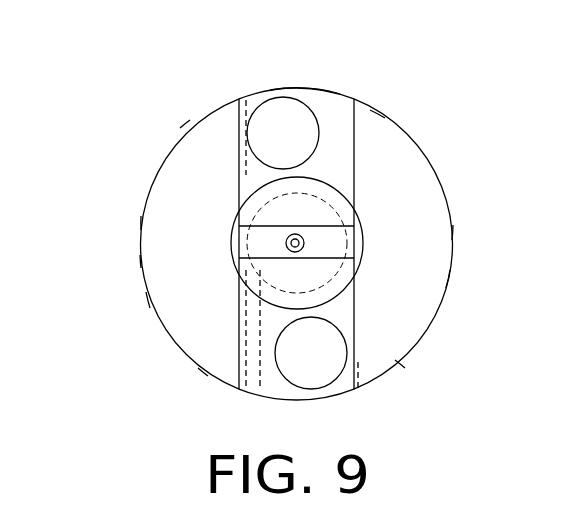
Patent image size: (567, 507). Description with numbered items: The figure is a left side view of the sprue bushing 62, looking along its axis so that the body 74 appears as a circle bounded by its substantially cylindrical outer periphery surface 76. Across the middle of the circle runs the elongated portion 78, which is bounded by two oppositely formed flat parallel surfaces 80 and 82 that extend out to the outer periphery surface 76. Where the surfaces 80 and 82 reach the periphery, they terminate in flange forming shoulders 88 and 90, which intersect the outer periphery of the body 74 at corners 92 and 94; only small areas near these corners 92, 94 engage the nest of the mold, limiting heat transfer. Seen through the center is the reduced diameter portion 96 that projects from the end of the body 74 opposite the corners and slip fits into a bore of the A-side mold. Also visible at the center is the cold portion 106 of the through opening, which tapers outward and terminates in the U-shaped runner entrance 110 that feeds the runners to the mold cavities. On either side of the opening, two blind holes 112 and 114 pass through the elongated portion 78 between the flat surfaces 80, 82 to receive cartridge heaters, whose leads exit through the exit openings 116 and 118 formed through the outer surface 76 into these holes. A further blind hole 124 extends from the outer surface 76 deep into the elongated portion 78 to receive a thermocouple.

The sprue bushing 62 is at (442, 110).
The body 74 is at (326, 74).
The outer periphery surface 76 is at (148, 300).
The elongated portion 78 is at (239, 182).
The flat parallel surface 80 is at (355, 300).
The flat parallel surface 82 is at (239, 333).
The flange forming shoulder 88 is at (432, 273).
The flange forming shoulder 90 is at (152, 223).
The corner 92 is at (378, 112).
The corner 94 is at (185, 132).
The reduced diameter portion 96 is at (346, 197).
The cold portion 106 is at (286, 243).
The U-shaped runner entrance 110 is at (337, 243).
The blind hole 112 is at (312, 357).
The blind hole 114 is at (276, 108).
The exit opening 116 is at (357, 390).
The exit opening 118 is at (248, 92).
The blind hole 124 is at (253, 395).